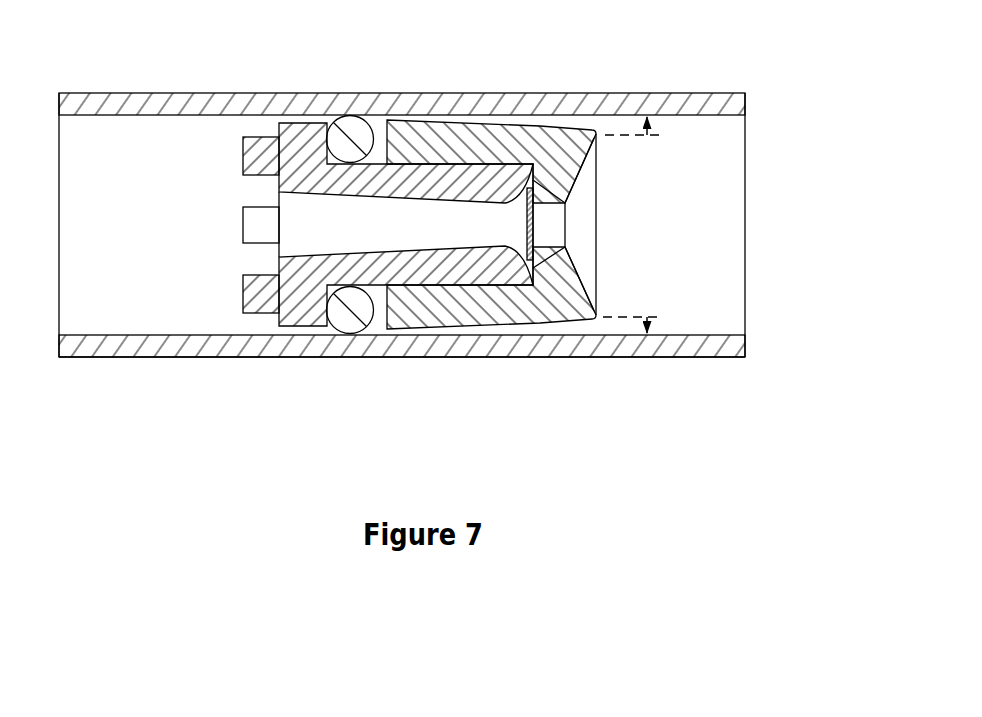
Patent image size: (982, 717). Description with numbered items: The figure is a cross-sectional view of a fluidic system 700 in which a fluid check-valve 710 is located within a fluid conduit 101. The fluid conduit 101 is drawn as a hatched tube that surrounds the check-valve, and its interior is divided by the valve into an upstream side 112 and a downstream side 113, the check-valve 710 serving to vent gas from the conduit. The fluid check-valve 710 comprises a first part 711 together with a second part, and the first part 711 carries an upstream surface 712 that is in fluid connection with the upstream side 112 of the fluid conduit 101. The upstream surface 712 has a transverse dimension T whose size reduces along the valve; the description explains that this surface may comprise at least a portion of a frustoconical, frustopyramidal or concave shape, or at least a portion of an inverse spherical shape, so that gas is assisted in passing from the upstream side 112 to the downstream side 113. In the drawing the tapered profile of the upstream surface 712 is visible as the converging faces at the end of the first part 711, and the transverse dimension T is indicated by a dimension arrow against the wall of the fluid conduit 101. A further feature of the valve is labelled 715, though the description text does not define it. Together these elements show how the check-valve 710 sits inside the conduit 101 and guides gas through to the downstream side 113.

The fluidic system 700 is at (227, 58).
The fluid conduit 101 is at (426, 91).
The upstream side 112 is at (679, 260).
The downstream side 113 is at (471, 225).
The fluid check-valve 710 is at (211, 243).
The first part 711 is at (566, 329).
The upstream surface 712 is at (588, 176).
The shoulder / flange 715 is at (262, 323).
The transverse dimension T is at (643, 225).